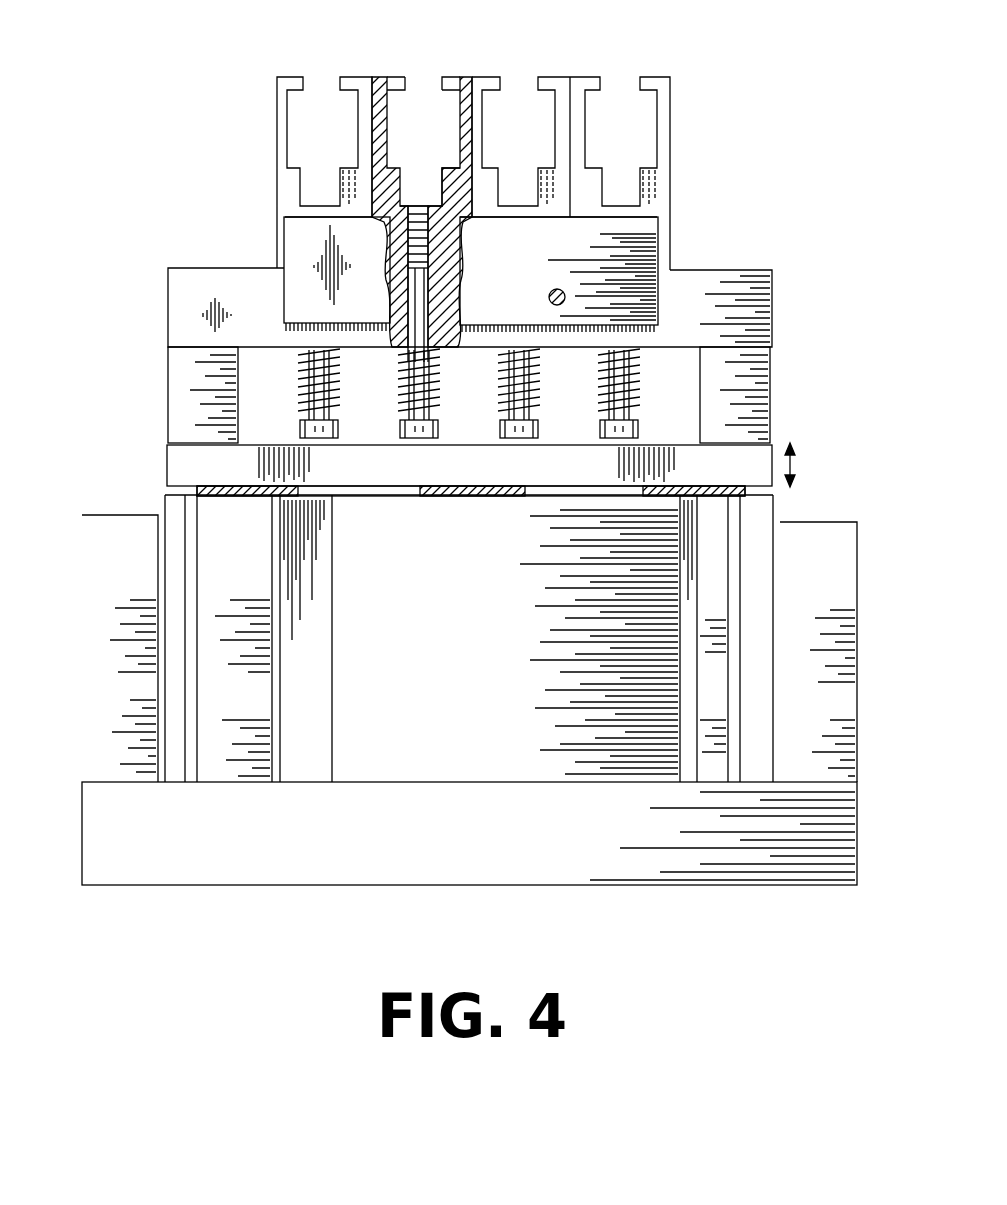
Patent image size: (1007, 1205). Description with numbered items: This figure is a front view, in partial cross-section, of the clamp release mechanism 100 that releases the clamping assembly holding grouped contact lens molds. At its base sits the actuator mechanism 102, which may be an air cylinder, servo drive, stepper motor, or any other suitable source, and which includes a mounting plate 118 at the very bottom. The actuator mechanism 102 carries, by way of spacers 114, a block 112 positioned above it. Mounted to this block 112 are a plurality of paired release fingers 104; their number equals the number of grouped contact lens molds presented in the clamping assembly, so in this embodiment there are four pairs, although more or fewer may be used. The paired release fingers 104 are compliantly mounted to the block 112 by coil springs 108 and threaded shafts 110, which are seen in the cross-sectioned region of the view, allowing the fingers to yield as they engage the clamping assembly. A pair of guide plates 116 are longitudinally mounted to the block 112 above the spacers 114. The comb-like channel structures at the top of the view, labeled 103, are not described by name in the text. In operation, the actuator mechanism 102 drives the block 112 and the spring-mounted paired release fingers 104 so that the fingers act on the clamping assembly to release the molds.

The clamp release mechanism 100 is at (798, 151).
The actuator mechanism 102 is at (446, 614).
The channel members 103 is at (285, 178).
The paired release fingers 104 is at (398, 77).
The coil springs 108 is at (332, 382).
The threaded shafts 110 is at (417, 206).
The block 112 is at (757, 307).
The spacers 114 is at (185, 388).
The guide plates 116 is at (290, 248).
The mounting plate 118 is at (412, 842).